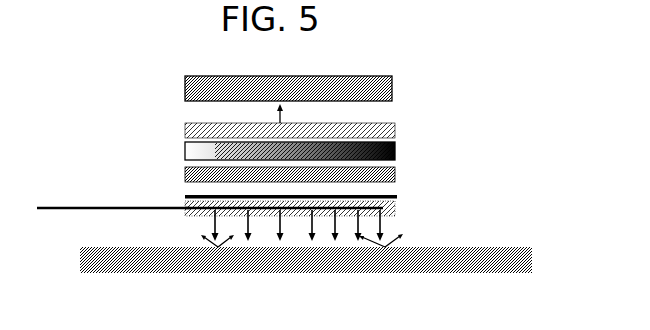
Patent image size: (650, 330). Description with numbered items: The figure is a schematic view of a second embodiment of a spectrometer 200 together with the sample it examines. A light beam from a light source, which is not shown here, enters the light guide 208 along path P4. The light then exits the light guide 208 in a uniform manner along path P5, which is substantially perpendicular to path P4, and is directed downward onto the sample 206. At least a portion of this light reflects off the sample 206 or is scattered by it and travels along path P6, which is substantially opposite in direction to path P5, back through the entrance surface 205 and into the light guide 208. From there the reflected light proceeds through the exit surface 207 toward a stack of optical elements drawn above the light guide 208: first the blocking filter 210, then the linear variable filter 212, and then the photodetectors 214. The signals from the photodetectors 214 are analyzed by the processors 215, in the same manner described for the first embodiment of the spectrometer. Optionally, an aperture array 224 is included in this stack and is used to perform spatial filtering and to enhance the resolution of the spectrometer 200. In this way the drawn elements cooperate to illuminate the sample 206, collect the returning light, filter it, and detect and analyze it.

The spectrometer 200 is at (156, 72).
The entrance surface 205 is at (385, 212).
The sample 206 is at (296, 268).
The exit surface 207 is at (192, 195).
The light guide 208 is at (395, 210).
The blocking filter 210 is at (398, 197).
The linear variable filter 212 is at (396, 151).
The photodetectors 214 is at (396, 126).
The processors 215 is at (392, 91).
The aperture array 224 is at (396, 176).
The path P4 is at (83, 206).
The path P5 is at (309, 222).
The path P6 is at (200, 240).